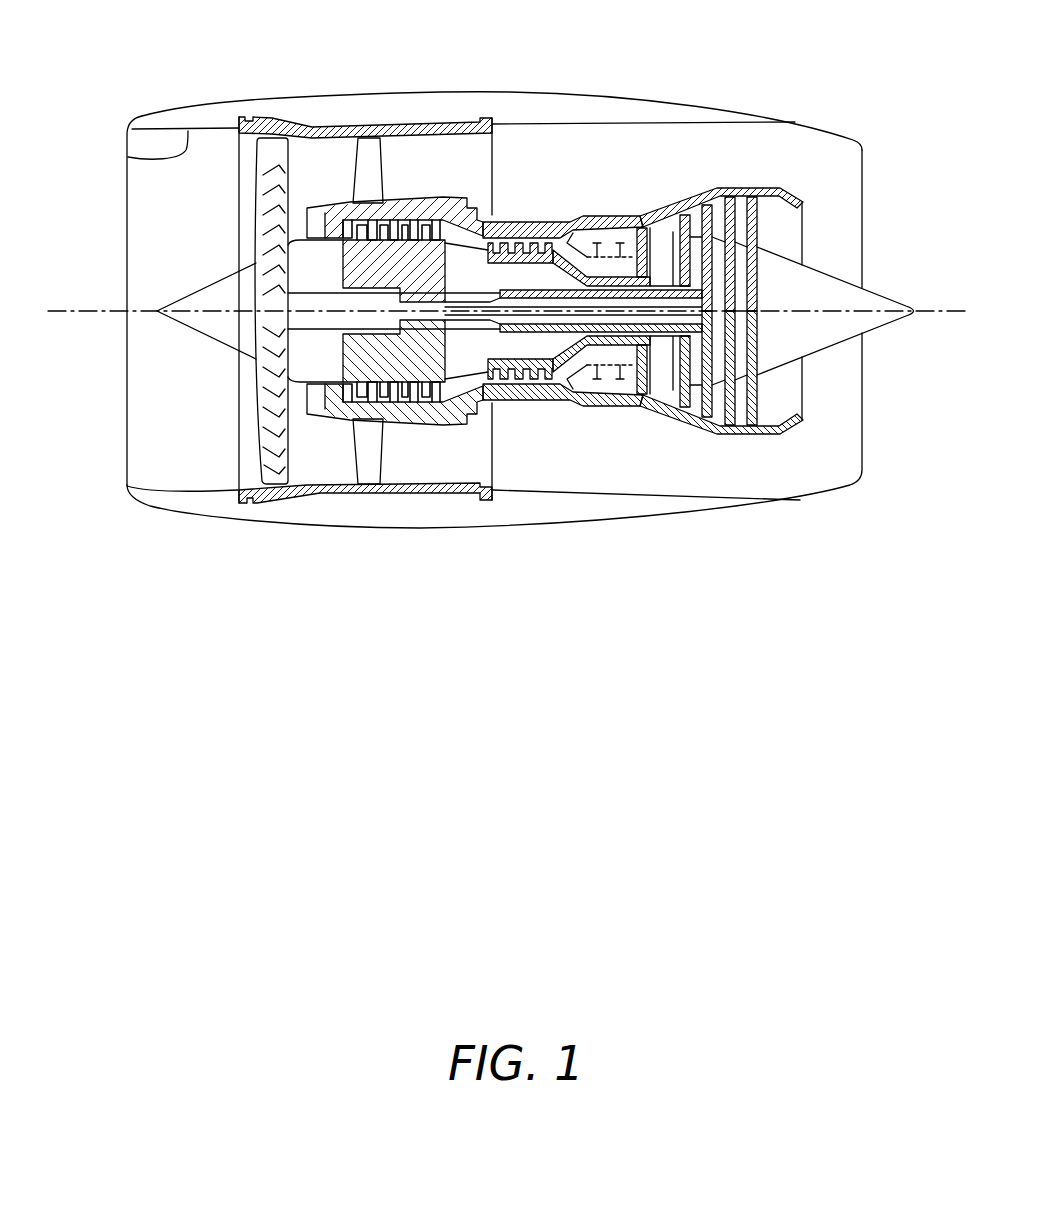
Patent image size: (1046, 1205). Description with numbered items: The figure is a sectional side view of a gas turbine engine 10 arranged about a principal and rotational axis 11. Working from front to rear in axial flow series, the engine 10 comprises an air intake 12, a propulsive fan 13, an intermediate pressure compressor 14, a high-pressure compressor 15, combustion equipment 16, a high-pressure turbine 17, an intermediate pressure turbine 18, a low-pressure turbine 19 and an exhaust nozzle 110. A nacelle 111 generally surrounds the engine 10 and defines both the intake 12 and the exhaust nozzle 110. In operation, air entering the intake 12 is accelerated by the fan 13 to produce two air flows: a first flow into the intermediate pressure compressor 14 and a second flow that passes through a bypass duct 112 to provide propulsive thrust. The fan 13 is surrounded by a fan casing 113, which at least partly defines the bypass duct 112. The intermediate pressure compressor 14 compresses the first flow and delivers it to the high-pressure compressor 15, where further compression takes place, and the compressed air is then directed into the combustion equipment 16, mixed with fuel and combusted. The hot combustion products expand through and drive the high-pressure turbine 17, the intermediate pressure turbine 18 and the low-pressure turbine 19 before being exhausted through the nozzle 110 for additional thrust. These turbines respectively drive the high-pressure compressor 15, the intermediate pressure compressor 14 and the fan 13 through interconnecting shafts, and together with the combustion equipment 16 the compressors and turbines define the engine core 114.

The gas turbine engine 10 is at (110, 115).
The principal and rotational axis 11 is at (56, 306).
The air intake 12 is at (128, 157).
The propulsive fan 13 is at (257, 405).
The intermediate pressure compressor 14 is at (378, 428).
The high-pressure compressor 15 is at (528, 242).
The combustion equipment 16 is at (587, 378).
The high-pressure turbine 17 is at (640, 395).
The intermediate pressure turbine 18 is at (683, 408).
The low-pressure turbine 19 is at (710, 412).
The exhaust nozzle 110 is at (862, 480).
The nacelle 111 is at (705, 107).
The bypass duct 112 is at (446, 176).
The fan casing 113 is at (340, 126).
The engine core 114 is at (755, 160).